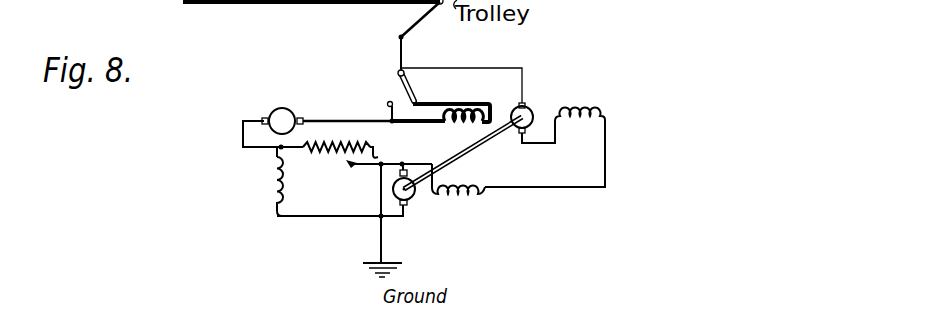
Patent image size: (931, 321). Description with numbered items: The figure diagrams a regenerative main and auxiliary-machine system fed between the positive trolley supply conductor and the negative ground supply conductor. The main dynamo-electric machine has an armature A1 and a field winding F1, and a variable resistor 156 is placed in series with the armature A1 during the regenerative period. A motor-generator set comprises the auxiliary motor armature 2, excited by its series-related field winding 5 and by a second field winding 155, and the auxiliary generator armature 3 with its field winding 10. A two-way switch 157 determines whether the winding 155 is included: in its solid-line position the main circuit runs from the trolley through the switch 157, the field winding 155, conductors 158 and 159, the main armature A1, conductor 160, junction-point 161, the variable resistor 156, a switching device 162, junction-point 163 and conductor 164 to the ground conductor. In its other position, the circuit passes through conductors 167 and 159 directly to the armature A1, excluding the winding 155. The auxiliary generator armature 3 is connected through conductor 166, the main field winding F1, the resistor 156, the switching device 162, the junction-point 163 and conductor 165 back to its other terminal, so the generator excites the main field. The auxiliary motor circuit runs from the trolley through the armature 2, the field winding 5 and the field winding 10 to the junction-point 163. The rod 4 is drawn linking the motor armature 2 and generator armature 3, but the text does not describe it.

The two-way switch 157 is at (415, 88).
The auxiliary motor armature 2 is at (527, 106).
The series-related field winding 5 is at (580, 110).
The field winding for the auxiliary generator armature 10 is at (451, 196).
The connecting rod 4 is at (463, 153).
The auxiliary generator armature 3 is at (410, 203).
The conductor 165 is at (406, 155).
The junction-point 163 is at (380, 168).
The conductor 164 is at (378, 239).
The conductor 166 is at (402, 222).
The field winding F1 is at (273, 189).
The junction-point 161 is at (278, 148).
The conductor 160 is at (243, 129).
The armature A1 is at (282, 108).
The conductor 159 is at (355, 121).
The variable resistor 156 is at (328, 163).
The switching device 162 is at (373, 142).
The conductor 167 is at (388, 105).
The conductor 158 is at (429, 120).
The field winding 155 is at (464, 127).